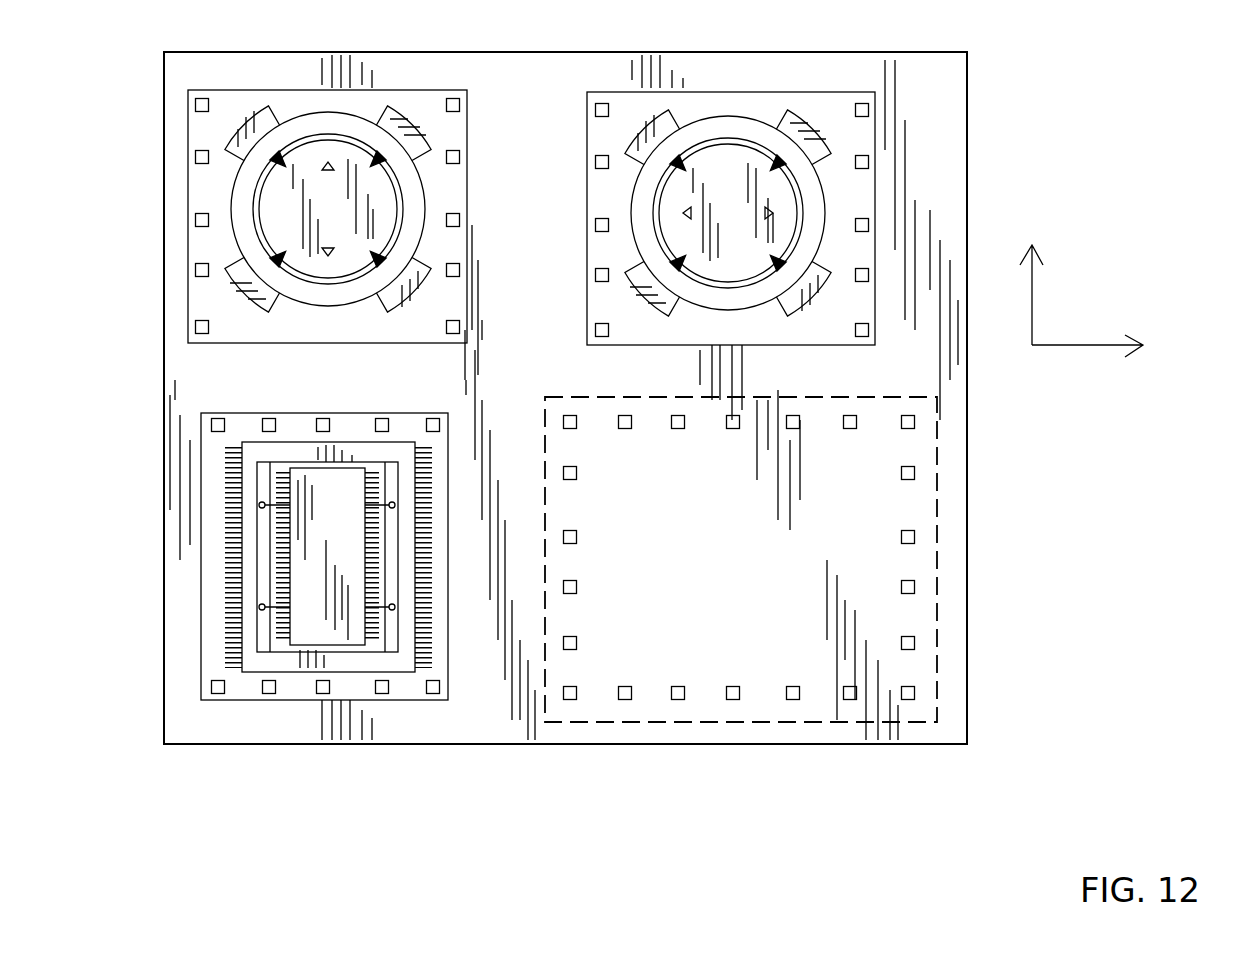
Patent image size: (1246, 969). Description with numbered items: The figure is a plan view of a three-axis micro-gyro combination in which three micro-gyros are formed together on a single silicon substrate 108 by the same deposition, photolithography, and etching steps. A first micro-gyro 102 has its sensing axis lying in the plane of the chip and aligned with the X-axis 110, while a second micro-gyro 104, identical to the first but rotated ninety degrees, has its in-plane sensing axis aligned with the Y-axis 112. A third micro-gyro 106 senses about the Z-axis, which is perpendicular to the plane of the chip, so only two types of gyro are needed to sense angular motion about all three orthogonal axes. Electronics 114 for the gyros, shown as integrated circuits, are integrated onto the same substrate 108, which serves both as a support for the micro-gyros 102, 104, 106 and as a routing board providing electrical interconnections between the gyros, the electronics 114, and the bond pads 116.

The first micro-gyro 102 is at (280, 88).
The second micro-gyro 104 is at (745, 183).
The third micro-gyro 106 is at (247, 703).
The silicon substrate 108 is at (617, 92).
The X-axis 110 is at (1062, 345).
The Y-axis 112 is at (1032, 298).
The electronics 114 is at (741, 646).
The bond pads 116 is at (853, 700).